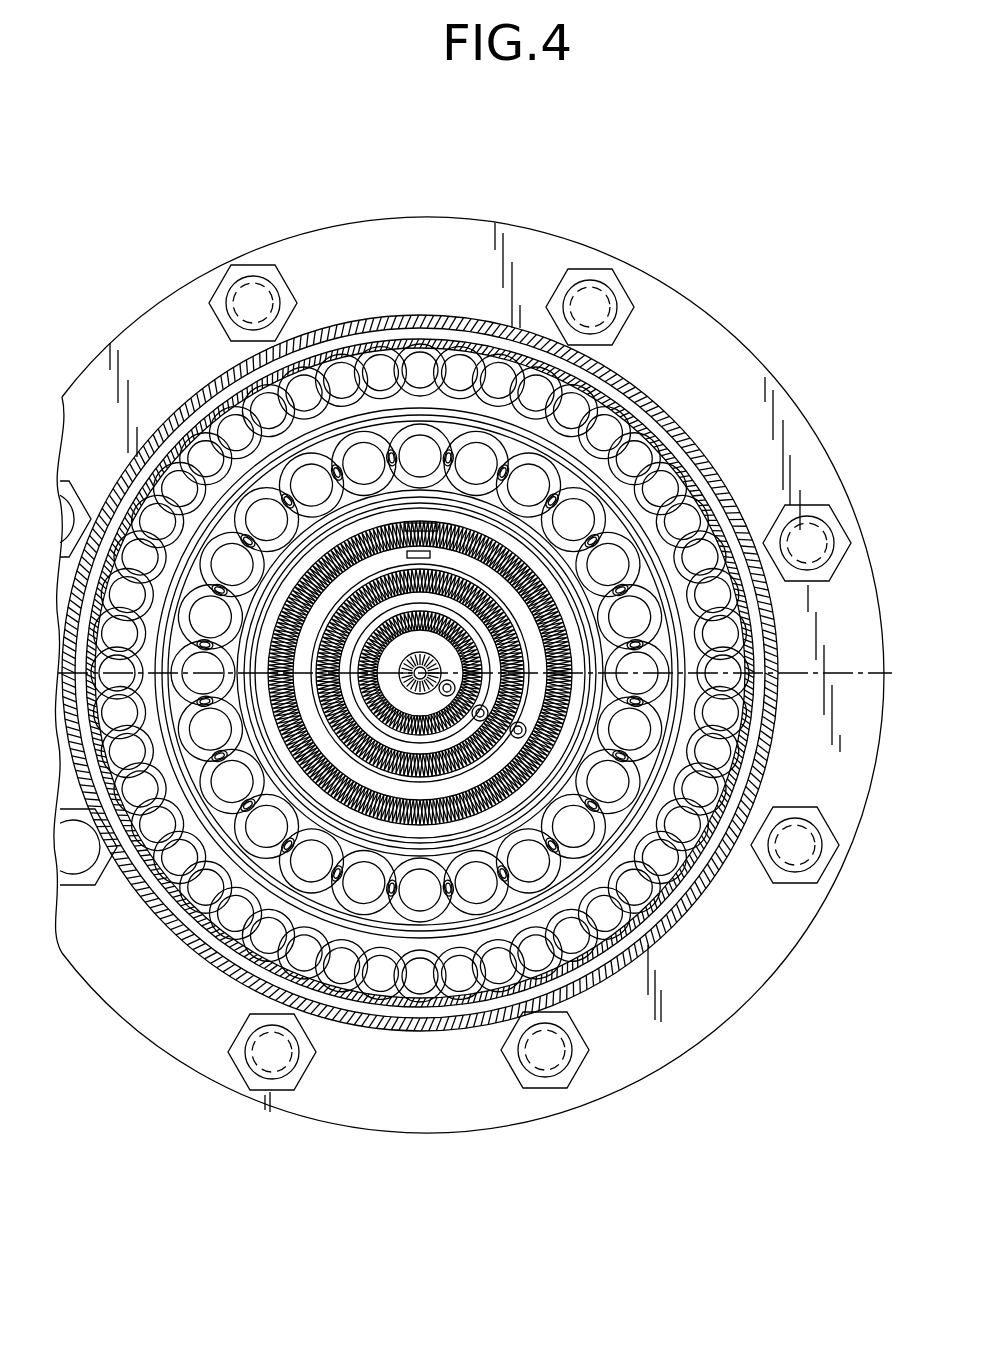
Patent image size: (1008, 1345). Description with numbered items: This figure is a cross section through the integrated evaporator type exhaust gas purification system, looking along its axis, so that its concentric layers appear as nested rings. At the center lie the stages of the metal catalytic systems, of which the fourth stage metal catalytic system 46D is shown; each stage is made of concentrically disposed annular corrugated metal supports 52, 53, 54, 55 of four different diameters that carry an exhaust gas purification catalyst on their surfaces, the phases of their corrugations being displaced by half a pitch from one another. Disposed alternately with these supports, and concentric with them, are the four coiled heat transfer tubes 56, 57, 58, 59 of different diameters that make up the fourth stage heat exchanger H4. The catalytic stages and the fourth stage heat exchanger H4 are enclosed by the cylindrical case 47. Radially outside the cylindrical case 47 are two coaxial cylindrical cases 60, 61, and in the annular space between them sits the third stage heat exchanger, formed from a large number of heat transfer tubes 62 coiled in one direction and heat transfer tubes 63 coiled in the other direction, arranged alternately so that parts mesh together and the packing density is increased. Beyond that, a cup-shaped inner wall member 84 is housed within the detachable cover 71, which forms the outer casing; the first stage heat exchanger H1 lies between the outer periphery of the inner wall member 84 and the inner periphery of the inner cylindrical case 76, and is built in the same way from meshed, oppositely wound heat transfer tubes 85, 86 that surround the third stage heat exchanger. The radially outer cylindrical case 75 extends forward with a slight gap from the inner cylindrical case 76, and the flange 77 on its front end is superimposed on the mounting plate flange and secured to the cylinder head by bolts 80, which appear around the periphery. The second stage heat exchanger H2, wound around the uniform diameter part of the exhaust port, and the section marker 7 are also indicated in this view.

The flange 77 is at (296, 250).
The cylindrical case 75 is at (700, 442).
The bolts 80 is at (588, 300).
The cylindrical case 76 is at (663, 416).
The cylindrical case 60 is at (651, 933).
The heat transfer tubes 85 is at (137, 884).
The fourth stage metal catalytic system 46D is at (213, 942).
The heat transfer tubes 86 is at (173, 922).
The inner wall member 84 is at (690, 867).
The cylindrical case 61 is at (568, 900).
The heat transfer tubes 62 is at (376, 925).
The cylindrical case 47 is at (465, 930).
The heat transfer tubes 63 is at (431, 915).
The annular corrugated metal support 52 is at (311, 484).
The annular corrugated metal support 53 is at (266, 519).
The annular corrugated metal support 54 is at (231, 564).
The annular corrugated metal support 55 is at (210, 616).
The heat transfer tube 56 is at (629, 728).
The heat transfer tube 57 is at (637, 673).
The heat transfer tube 58 is at (629, 616).
The heat transfer tube 59 is at (607, 564).
The detachable cover 71 is at (196, 392).
The fourth stage heat exchanger H4 is at (462, 513).
The section line 7 is at (397, 520).
The first stage heat exchanger H1 is at (376, 345).
The second stage heat exchanger H2 is at (242, 966).